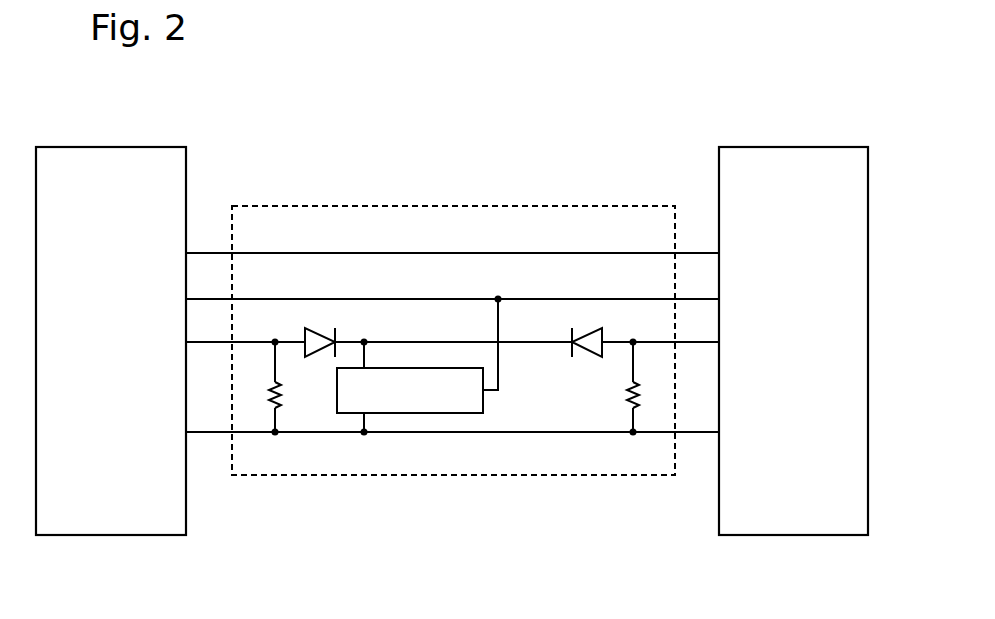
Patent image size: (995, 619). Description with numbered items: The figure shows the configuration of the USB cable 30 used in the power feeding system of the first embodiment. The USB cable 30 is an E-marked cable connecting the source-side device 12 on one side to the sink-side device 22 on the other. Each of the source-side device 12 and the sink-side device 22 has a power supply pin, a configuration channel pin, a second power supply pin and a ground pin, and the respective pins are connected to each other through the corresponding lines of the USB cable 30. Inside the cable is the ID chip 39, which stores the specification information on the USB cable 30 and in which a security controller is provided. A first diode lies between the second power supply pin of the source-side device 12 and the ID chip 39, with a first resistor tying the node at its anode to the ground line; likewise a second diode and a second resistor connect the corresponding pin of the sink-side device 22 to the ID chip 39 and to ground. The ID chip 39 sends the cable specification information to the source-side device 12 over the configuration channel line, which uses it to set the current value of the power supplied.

The source-side device 12 is at (148, 147).
The sink-side device 22 is at (828, 147).
The USB cable 30 is at (588, 206).
The ID chip 39 is at (483, 400).